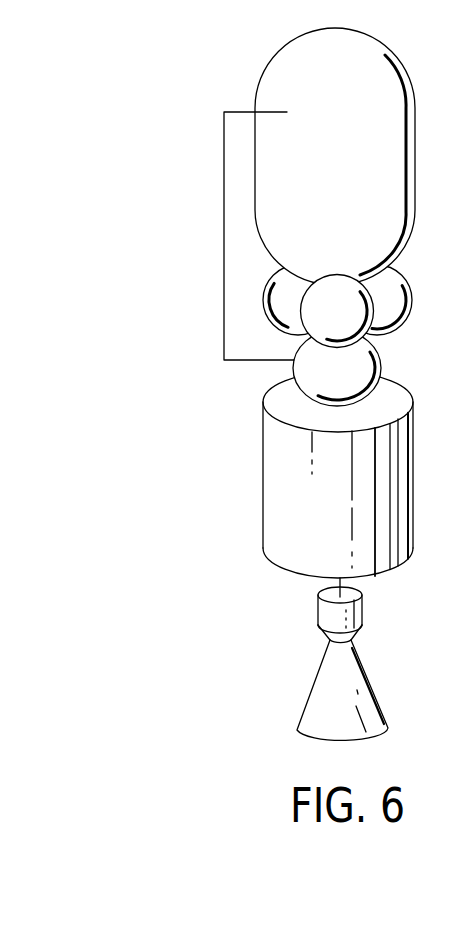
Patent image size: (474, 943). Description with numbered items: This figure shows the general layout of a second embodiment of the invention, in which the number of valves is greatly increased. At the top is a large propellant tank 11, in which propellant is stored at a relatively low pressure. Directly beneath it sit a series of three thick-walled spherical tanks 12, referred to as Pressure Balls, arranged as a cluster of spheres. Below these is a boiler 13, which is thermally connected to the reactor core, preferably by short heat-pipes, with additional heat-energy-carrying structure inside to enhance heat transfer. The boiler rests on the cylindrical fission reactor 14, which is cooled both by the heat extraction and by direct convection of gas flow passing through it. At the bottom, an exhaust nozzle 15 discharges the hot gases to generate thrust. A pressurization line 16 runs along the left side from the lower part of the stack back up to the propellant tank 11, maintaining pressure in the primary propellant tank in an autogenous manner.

The propellant tank 11 is at (390, 147).
The thick-walled spherical tanks 12 is at (346, 303).
The boiler 13 is at (364, 348).
The fission reactor 14 is at (288, 468).
The exhaust nozzle 15 is at (333, 686).
The pressurization line 16 is at (223, 298).